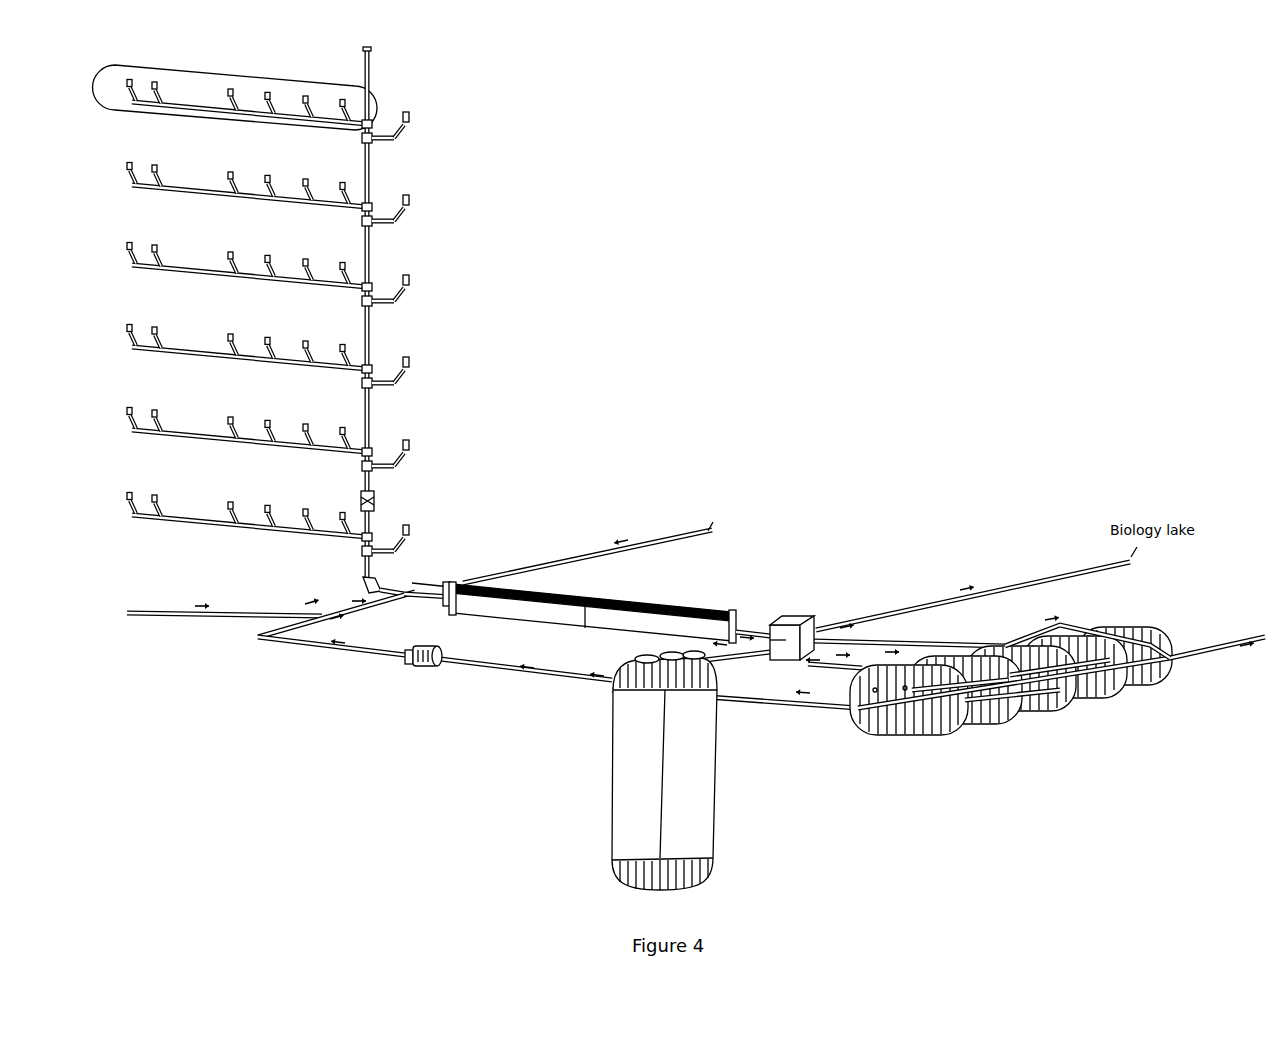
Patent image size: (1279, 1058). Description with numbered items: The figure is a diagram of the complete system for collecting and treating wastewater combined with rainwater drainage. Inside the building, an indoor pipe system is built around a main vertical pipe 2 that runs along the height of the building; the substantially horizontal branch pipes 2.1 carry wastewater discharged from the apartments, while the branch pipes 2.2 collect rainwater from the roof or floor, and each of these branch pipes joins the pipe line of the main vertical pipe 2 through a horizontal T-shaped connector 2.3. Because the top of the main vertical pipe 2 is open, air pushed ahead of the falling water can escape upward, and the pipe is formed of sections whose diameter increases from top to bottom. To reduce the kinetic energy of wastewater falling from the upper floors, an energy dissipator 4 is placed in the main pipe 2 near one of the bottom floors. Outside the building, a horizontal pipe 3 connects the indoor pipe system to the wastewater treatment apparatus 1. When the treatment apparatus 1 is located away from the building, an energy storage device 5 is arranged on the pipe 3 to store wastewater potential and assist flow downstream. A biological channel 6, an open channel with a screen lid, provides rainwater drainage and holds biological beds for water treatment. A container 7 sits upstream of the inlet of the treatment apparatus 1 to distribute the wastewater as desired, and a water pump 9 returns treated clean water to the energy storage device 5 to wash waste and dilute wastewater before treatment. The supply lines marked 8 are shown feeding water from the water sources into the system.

The wastewater treatment apparatus 1 is at (627, 736).
The main vertical pipe 2 is at (370, 265).
The branch pipes 2.1 is at (355, 83).
The branch pipes 2.2 is at (406, 206).
The horizontal T-shaped connector 2.3 is at (370, 367).
The horizontal pipe 3 is at (363, 582).
The energy dissipator 4 is at (373, 497).
The energy storage device 5 is at (431, 580).
The biological channel 6 is at (688, 589).
The container 7 is at (825, 609).
The water source pipe 8 is at (240, 613).
The water pump 9 is at (410, 668).